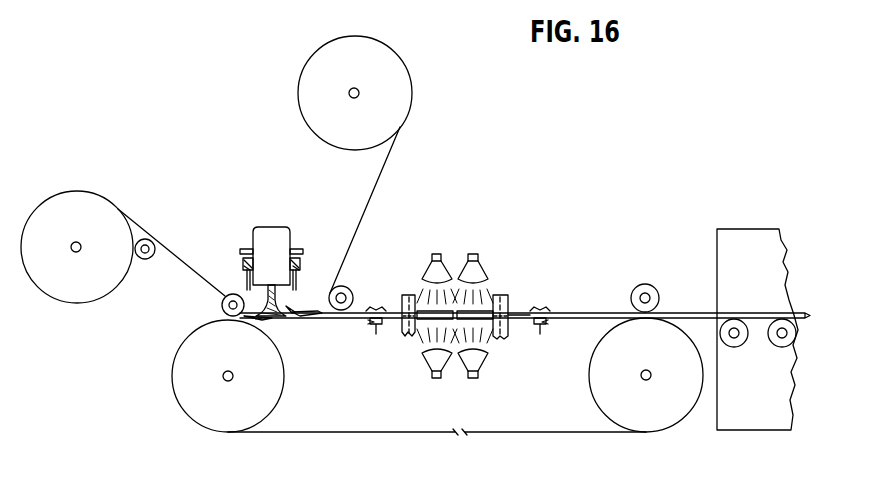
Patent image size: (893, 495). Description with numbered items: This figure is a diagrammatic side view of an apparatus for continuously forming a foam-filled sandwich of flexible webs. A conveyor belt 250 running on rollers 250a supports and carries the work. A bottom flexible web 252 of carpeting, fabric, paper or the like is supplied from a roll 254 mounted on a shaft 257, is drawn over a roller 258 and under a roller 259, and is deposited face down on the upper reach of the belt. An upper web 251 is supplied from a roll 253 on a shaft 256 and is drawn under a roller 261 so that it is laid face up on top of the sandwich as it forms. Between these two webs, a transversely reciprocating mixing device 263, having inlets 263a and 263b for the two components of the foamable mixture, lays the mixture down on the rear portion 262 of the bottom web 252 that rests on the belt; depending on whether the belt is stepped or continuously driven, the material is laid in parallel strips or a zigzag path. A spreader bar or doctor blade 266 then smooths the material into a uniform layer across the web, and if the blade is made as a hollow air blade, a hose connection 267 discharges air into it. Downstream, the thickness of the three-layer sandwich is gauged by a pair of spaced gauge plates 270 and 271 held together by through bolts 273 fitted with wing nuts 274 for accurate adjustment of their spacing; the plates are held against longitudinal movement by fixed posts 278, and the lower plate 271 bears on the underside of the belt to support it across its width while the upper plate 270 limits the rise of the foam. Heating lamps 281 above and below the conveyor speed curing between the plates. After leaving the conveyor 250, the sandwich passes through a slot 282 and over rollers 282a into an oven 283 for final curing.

The conveyor belt 250 is at (376, 431).
The belt rollers 250a is at (285, 376).
The flexible web 251 is at (386, 166).
The flexible web 252 is at (178, 260).
The roll 253 is at (411, 80).
The roll 254 is at (77, 191).
The shaft 256 is at (356, 98).
The shaft 257 is at (76, 252).
The roller 258 is at (146, 260).
The roller 259 is at (224, 297).
The roller 261 is at (348, 287).
The rear portion of the web 262 is at (258, 322).
The mixing device 263 is at (272, 227).
The inlet 263a is at (241, 251).
The inlet 263b is at (301, 251).
The doctor blade 266 is at (308, 318).
The hose connection 267 is at (294, 311).
The gauge plate 270 is at (472, 311).
The gauge plate 271 is at (521, 321).
The through bolts 273 is at (375, 327).
The wing nuts 274 is at (376, 306).
The fixed posts 278 is at (408, 294).
The heating lamps 281 is at (469, 256).
The slot 282 is at (716, 313).
The rollers 282a is at (772, 345).
The oven 283 is at (736, 222).